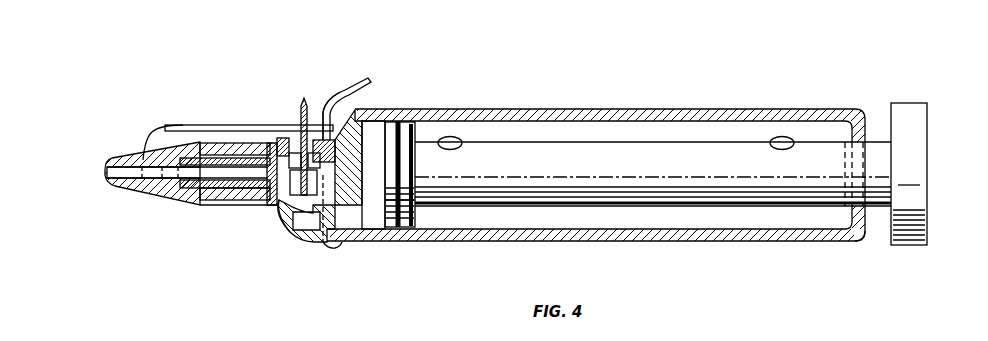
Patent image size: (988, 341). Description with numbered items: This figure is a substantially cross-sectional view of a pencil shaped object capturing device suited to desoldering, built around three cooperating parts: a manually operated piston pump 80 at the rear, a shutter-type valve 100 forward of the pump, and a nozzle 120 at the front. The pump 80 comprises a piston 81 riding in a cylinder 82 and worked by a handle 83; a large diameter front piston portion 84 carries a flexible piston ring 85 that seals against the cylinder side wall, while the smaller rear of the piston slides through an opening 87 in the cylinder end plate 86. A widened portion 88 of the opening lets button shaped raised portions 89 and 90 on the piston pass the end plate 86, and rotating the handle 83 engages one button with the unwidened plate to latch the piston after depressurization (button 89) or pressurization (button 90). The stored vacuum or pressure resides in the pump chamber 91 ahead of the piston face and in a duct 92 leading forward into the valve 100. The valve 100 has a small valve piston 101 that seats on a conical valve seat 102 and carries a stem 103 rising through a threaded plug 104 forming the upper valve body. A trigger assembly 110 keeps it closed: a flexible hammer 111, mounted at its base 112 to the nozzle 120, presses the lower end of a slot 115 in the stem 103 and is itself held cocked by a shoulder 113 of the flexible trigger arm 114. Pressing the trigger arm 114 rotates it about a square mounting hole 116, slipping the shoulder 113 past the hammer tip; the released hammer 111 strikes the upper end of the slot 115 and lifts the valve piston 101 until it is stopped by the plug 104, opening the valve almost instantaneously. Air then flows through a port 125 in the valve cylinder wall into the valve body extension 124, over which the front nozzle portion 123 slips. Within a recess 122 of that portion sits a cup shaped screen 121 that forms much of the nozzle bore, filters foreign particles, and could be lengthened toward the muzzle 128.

The piston pump 80 is at (490, 87).
The piston 81 is at (620, 142).
The cylinder 82 is at (735, 110).
The handle 83 is at (912, 107).
The front piston portion 84 is at (417, 213).
The piston ring 85 is at (400, 233).
The cylinder end plate 86 is at (863, 229).
The opening 87 is at (868, 148).
The widened portion of opening 88 is at (850, 176).
The button 89 is at (459, 147).
The button 90 is at (772, 142).
The pump chamber 91 is at (373, 128).
The duct 92 is at (303, 228).
The shutter-type valve 100 is at (240, 260).
The valve piston 101 is at (306, 182).
The valve seat 102 is at (303, 208).
The valve stem 103 is at (304, 98).
The threaded plug 104 is at (278, 138).
The trigger assembly 110 is at (258, 70).
The flexible hammer 111 is at (282, 127).
The base 112 is at (148, 143).
The shoulder 113 is at (327, 120).
The trigger arm 114 is at (358, 75).
The slot 115 is at (295, 130).
The square mounting hole 116 is at (325, 247).
The nozzle 120 is at (97, 208).
The cup shaped screen 121 is at (205, 177).
The recess 122 is at (193, 142).
The front nozzle portion 123 is at (138, 155).
The valve body extension 124 is at (236, 203).
The port 125 is at (273, 202).
The muzzle 128 is at (110, 158).